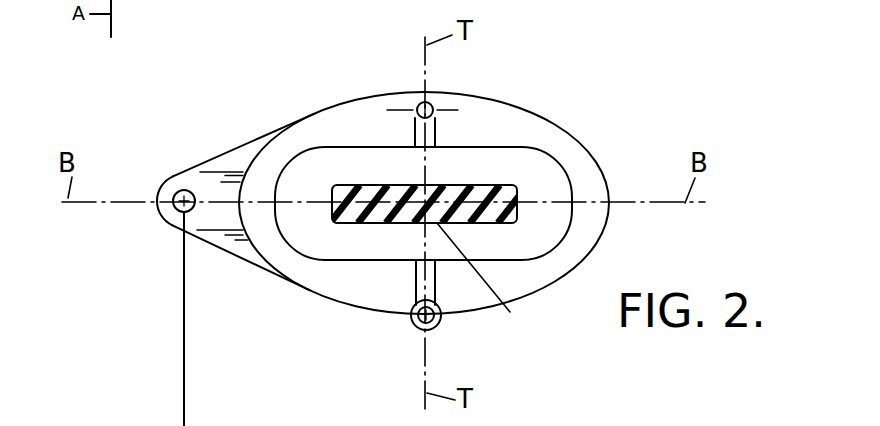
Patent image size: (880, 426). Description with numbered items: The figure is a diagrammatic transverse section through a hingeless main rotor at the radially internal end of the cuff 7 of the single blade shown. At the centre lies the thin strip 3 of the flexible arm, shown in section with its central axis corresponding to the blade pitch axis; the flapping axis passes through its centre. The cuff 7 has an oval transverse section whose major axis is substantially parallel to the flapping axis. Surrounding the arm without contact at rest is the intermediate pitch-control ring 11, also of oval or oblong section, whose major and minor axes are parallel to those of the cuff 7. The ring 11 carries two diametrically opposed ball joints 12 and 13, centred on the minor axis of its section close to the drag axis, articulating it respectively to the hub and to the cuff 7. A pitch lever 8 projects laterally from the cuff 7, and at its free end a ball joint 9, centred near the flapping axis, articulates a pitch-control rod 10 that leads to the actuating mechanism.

The thin strip 3 is at (400, 223).
The cuff 7 is at (325, 109).
The pitch lever 8 is at (218, 163).
The ball joint 9 is at (180, 197).
The pitch-control rod 10 is at (183, 375).
The intermediate pitch-control ring 11 is at (517, 147).
The ball joint 12 is at (428, 108).
The ball joint 13 is at (432, 323).